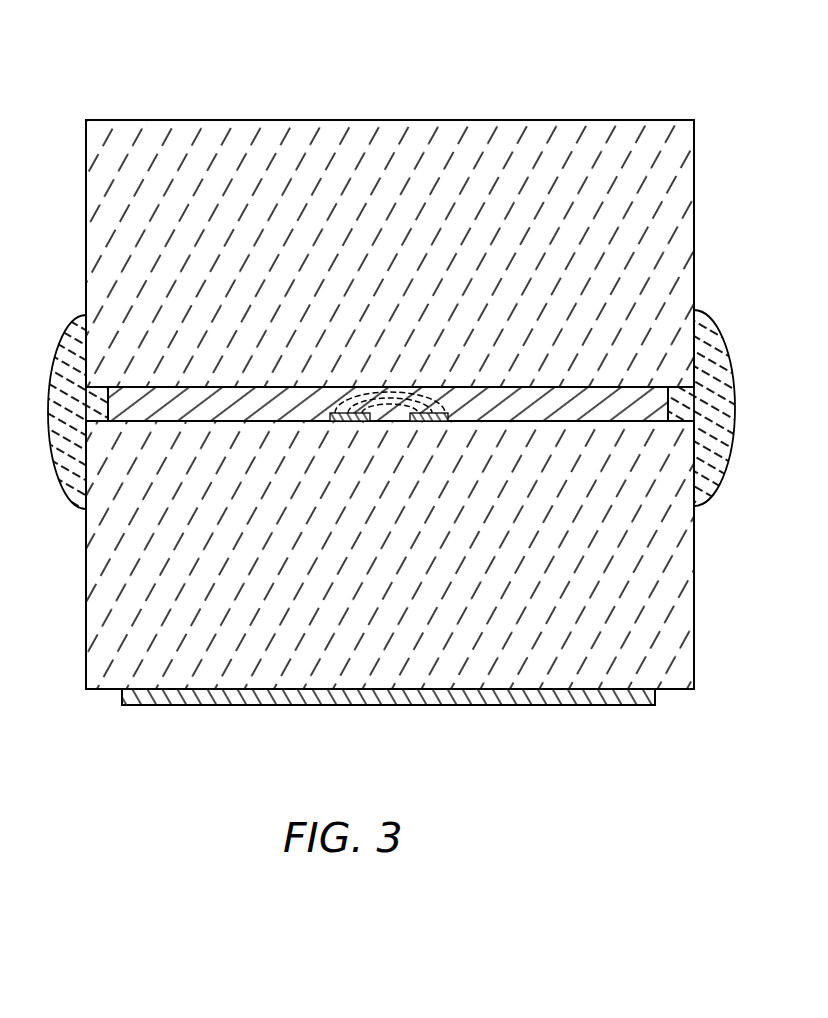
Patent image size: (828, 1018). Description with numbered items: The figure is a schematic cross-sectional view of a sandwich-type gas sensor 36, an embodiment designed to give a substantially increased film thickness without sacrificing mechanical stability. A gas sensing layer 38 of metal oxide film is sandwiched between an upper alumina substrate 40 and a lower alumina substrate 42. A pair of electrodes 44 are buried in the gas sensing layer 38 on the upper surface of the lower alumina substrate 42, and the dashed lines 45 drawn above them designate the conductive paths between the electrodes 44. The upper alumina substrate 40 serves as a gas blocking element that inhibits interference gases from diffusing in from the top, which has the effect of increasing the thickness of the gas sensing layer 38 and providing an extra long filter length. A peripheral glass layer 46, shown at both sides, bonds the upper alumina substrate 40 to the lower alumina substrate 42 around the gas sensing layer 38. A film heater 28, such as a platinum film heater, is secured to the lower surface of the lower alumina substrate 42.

The gas sensor 36 is at (158, 90).
The upper alumina substrate 40 is at (87, 158).
The lower alumina substrate 42 is at (85, 578).
The gas sensing layer 38 is at (242, 390).
The electrodes 44 is at (332, 421).
The lines 45 is at (405, 388).
The peripheral glass layer 46 is at (62, 338).
The film heater 28 is at (167, 706).